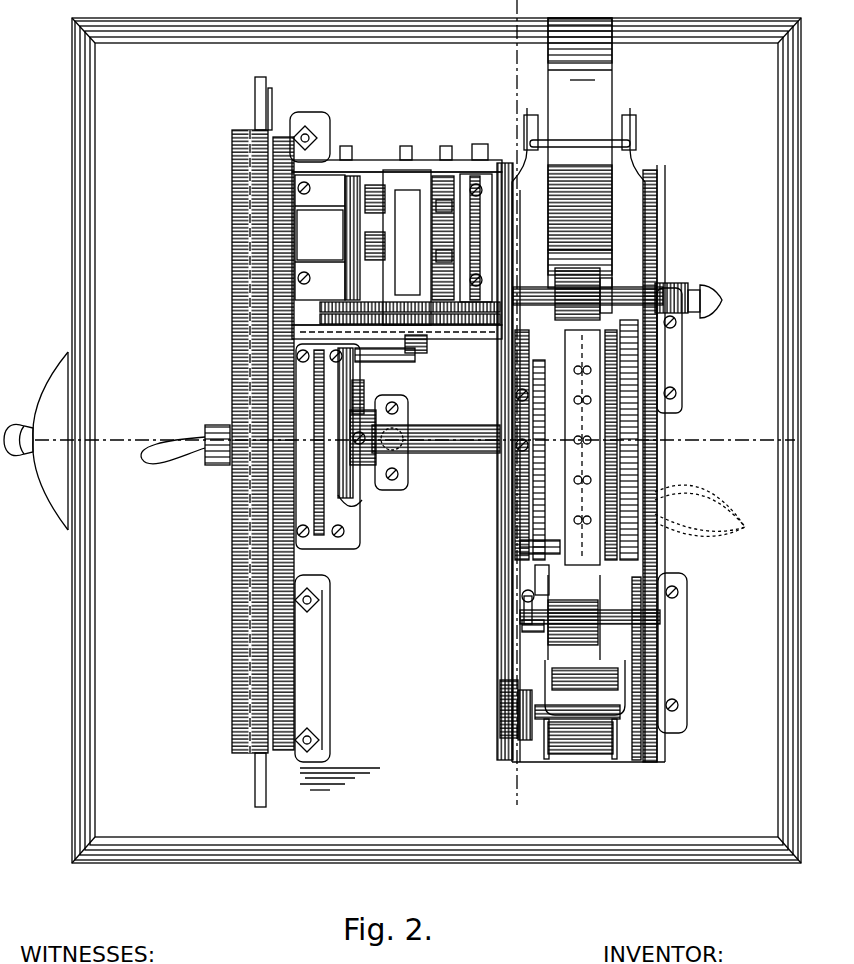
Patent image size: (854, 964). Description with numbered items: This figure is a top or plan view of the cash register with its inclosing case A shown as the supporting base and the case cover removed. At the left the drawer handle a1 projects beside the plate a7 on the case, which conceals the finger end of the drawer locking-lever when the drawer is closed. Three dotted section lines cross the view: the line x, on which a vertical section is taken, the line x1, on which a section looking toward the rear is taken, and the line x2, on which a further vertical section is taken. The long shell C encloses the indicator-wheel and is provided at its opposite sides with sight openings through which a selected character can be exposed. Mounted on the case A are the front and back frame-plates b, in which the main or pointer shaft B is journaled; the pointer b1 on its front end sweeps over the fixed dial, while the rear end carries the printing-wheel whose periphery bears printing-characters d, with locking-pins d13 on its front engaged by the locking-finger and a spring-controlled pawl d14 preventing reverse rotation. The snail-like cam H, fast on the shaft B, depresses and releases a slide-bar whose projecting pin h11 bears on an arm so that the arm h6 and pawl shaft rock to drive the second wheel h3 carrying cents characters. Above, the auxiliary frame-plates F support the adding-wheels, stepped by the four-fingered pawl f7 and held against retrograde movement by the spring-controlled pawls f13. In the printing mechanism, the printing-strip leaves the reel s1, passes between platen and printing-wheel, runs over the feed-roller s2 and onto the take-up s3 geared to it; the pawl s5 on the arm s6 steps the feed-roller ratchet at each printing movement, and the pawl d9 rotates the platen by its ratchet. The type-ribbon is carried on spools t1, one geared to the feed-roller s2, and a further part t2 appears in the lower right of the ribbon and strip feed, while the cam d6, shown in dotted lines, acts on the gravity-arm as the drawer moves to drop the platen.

The inclosing case A is at (436, 440).
The handle a1 is at (22, 462).
The plate a7 is at (56, 485).
The section line x x is at (415, 439).
The section line x' x' x1 is at (510, 402).
The section line x2 x2 is at (243, 442).
The inclosing case or shell C is at (236, 524).
The frame-plates b is at (352, 550).
The pointer b1 is at (170, 452).
The frame-plates of auxiliary frame F is at (378, 158).
The pawl f7 is at (338, 238).
The spring-controlled pawls f13 is at (455, 208).
The second wheel h3 is at (455, 352).
The arm h6 is at (380, 364).
The projecting pin h11 is at (364, 395).
The main or pointer shaft B is at (470, 455).
The snail-like cam H is at (360, 485).
The reel s1 is at (595, 100).
The printing-characters d is at (588, 398).
The spools t1 is at (590, 282).
The gear t2 is at (640, 642).
The feed-roller s2 is at (560, 698).
The take-up s3 is at (592, 742).
The pawl s5 is at (522, 648).
The arm s6 is at (530, 660).
The locking-pins d13 is at (540, 518).
The spring-controlled pawl d14 is at (540, 570).
The pawl d9 is at (540, 603).
The cam d6 is at (700, 530).